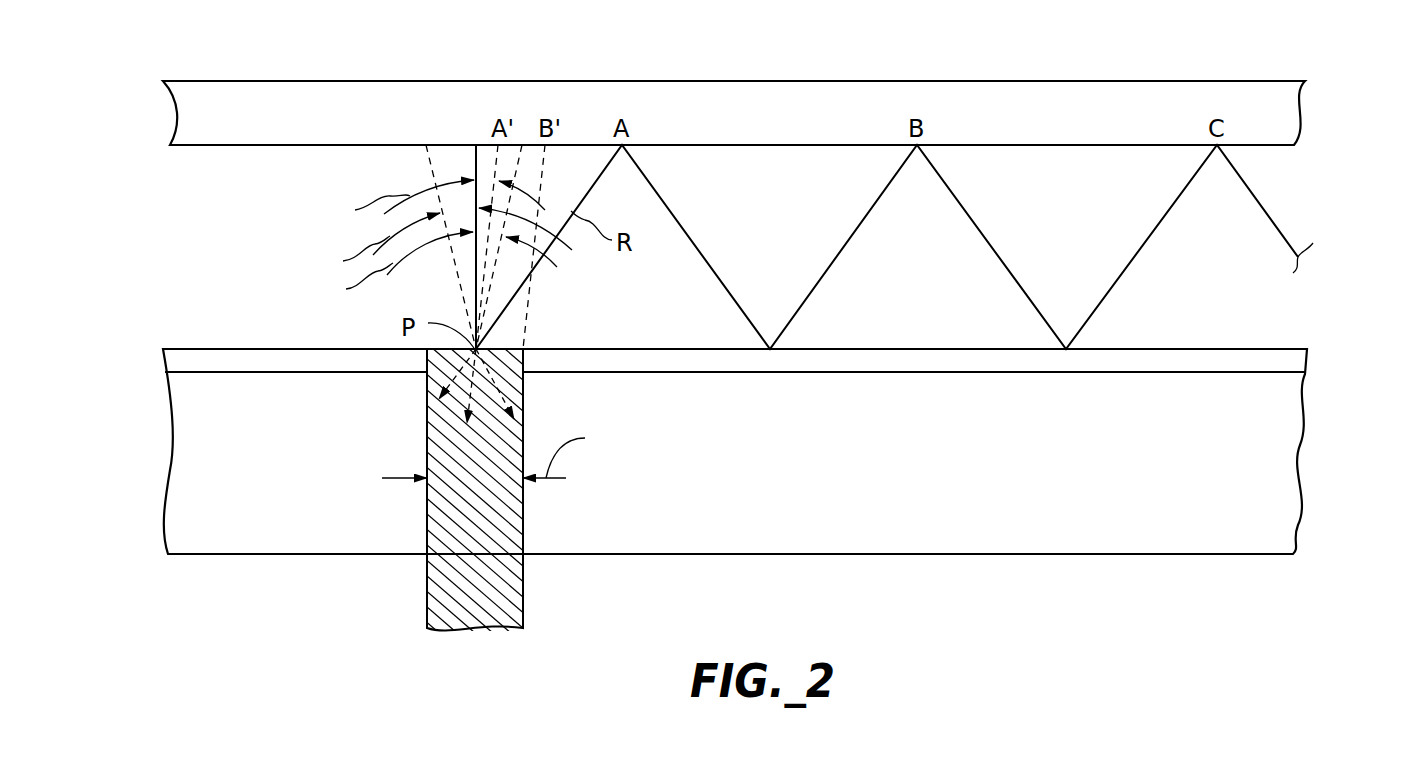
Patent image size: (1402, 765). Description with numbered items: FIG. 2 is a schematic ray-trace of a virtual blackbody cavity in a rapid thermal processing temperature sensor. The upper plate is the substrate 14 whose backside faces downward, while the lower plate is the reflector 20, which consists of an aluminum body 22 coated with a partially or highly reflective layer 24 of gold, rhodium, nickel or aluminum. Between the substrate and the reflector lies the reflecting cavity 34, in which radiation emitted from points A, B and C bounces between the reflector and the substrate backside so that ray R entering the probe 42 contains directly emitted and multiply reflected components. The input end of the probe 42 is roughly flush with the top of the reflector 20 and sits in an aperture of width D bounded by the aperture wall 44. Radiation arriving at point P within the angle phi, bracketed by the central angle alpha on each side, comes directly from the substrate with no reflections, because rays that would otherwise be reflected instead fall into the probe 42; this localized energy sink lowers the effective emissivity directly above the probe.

The transparent cover plate 14 is at (975, 95).
The reflector 20 is at (1320, 424).
The aluminum body 22 is at (1253, 556).
The reflective layer 24 is at (1320, 355).
The reflecting cavity 34 is at (419, 247).
The probe 42 is at (523, 597).
The slot side wall 44 is at (427, 518).